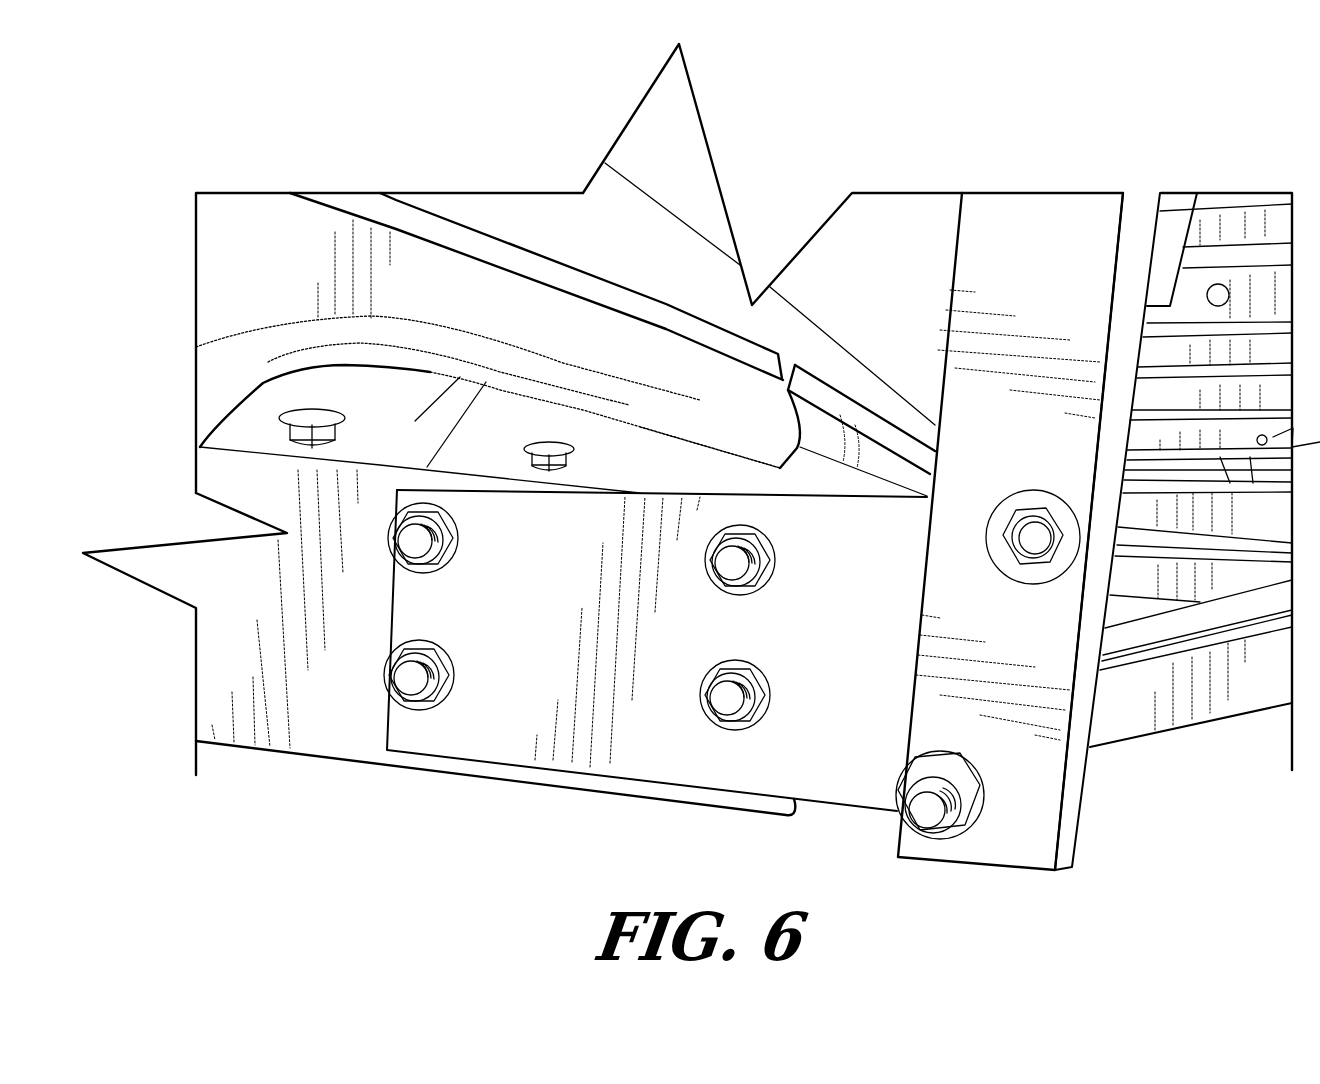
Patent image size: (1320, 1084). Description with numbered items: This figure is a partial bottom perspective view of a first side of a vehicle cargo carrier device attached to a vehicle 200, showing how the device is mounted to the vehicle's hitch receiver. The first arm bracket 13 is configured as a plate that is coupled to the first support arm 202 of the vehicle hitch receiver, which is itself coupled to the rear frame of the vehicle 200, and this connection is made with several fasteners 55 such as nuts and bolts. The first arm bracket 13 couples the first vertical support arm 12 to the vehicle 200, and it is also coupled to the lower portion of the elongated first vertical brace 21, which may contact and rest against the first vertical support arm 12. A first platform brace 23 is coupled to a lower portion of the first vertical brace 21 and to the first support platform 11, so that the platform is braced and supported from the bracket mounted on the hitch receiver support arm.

The vehicle 200 is at (280, 275).
The first support arm 202 is at (350, 712).
The first arm bracket 13 is at (627, 737).
The fasteners 55 is at (416, 540).
The first vertical support arm 12 is at (1020, 740).
The first vertical brace 21 is at (1125, 292).
The first platform brace 23 is at (1118, 727).
The first support platform 11 is at (1240, 740).